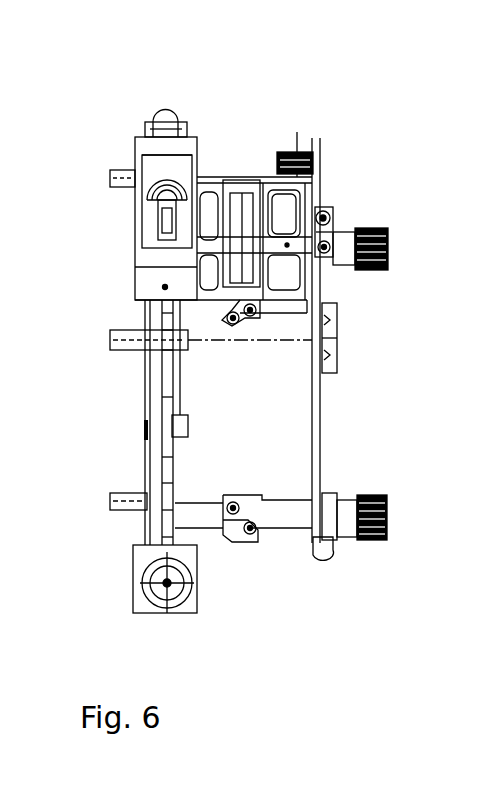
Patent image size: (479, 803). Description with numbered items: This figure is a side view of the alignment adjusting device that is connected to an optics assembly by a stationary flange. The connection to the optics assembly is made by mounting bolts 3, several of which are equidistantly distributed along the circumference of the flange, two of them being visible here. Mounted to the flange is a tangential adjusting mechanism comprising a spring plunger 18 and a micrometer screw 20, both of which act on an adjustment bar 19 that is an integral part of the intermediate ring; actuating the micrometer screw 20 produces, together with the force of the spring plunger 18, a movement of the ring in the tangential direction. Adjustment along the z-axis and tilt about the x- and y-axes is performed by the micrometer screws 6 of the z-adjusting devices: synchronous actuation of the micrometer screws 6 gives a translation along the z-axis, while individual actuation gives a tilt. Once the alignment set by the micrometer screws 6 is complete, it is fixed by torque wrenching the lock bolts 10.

The micrometer screw 20 is at (208, 89).
The adjustment bar 19 is at (115, 218).
The spring plunger 18 is at (117, 268).
The mounting bolt 3 is at (116, 493).
The lock bolt 10 is at (328, 244).
The micrometer screw 6 is at (383, 384).